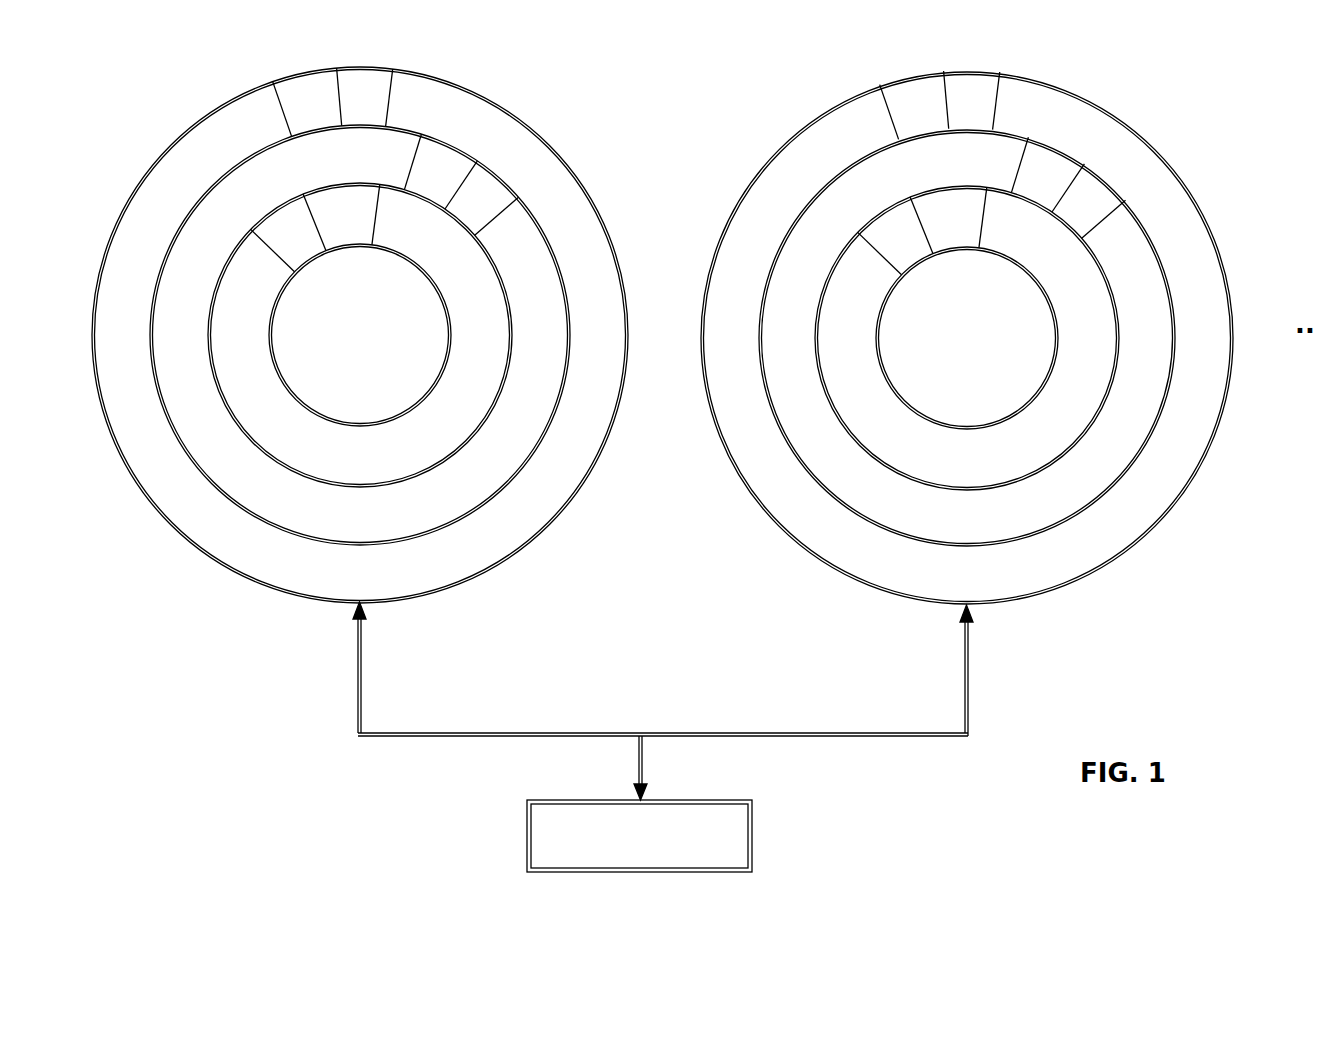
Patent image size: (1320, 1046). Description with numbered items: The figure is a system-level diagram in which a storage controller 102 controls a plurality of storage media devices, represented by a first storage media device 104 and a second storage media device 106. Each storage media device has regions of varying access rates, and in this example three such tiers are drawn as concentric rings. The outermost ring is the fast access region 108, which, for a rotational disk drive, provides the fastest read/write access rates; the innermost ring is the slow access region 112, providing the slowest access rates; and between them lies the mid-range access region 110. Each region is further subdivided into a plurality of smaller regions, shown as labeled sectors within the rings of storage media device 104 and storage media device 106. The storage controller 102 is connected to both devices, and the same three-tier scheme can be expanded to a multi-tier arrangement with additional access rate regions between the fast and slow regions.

The storage controller 102 is at (663, 737).
The storage media device 104 is at (360, 335).
The storage media device 106 is at (967, 338).
The fast access region 108 is at (845, 120).
The mid-range access region 110 is at (808, 268).
The slow access region 112 is at (855, 395).